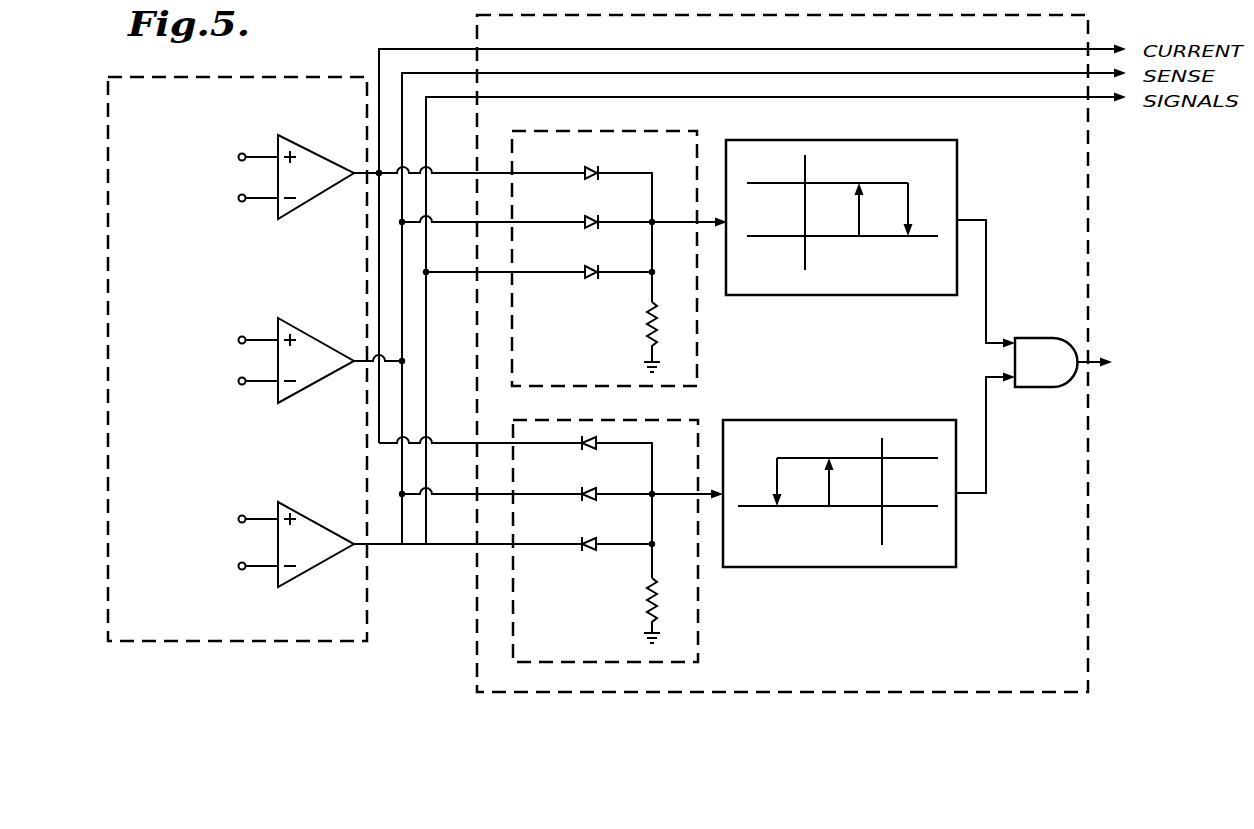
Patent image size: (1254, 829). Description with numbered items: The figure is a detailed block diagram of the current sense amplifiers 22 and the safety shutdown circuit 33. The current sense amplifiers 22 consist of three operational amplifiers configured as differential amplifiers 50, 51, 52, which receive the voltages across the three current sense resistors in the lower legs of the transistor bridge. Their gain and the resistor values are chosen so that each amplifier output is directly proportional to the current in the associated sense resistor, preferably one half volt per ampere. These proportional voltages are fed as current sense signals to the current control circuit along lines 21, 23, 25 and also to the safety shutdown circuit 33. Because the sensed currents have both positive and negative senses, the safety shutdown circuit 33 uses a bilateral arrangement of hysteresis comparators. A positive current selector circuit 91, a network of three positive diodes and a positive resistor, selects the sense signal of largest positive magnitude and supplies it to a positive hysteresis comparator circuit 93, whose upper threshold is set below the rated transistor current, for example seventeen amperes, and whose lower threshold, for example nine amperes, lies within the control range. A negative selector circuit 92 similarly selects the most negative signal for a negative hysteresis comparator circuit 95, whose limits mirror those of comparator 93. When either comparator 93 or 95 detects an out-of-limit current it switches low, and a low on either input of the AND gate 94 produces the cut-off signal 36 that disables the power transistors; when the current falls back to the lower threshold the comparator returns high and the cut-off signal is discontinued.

The line 21 is at (731, 49).
The current sense amplifiers 22 is at (225, 643).
The line 23 is at (790, 73).
The line 25 is at (868, 97).
The safety shutdown circuit 33 is at (830, 693).
The cut-off signal 36 is at (1094, 353).
The differential amplifier 50 is at (320, 143).
The differential amplifier 51 is at (311, 334).
The differential amplifier 52 is at (314, 520).
The positive current selector circuit 91 is at (680, 128).
The negative selector circuit 92 is at (700, 638).
The positive hysteresis comparator circuit 93 is at (960, 172).
The AND gate 94 is at (1036, 337).
The negative hysteresis comparator circuit 95 is at (958, 533).